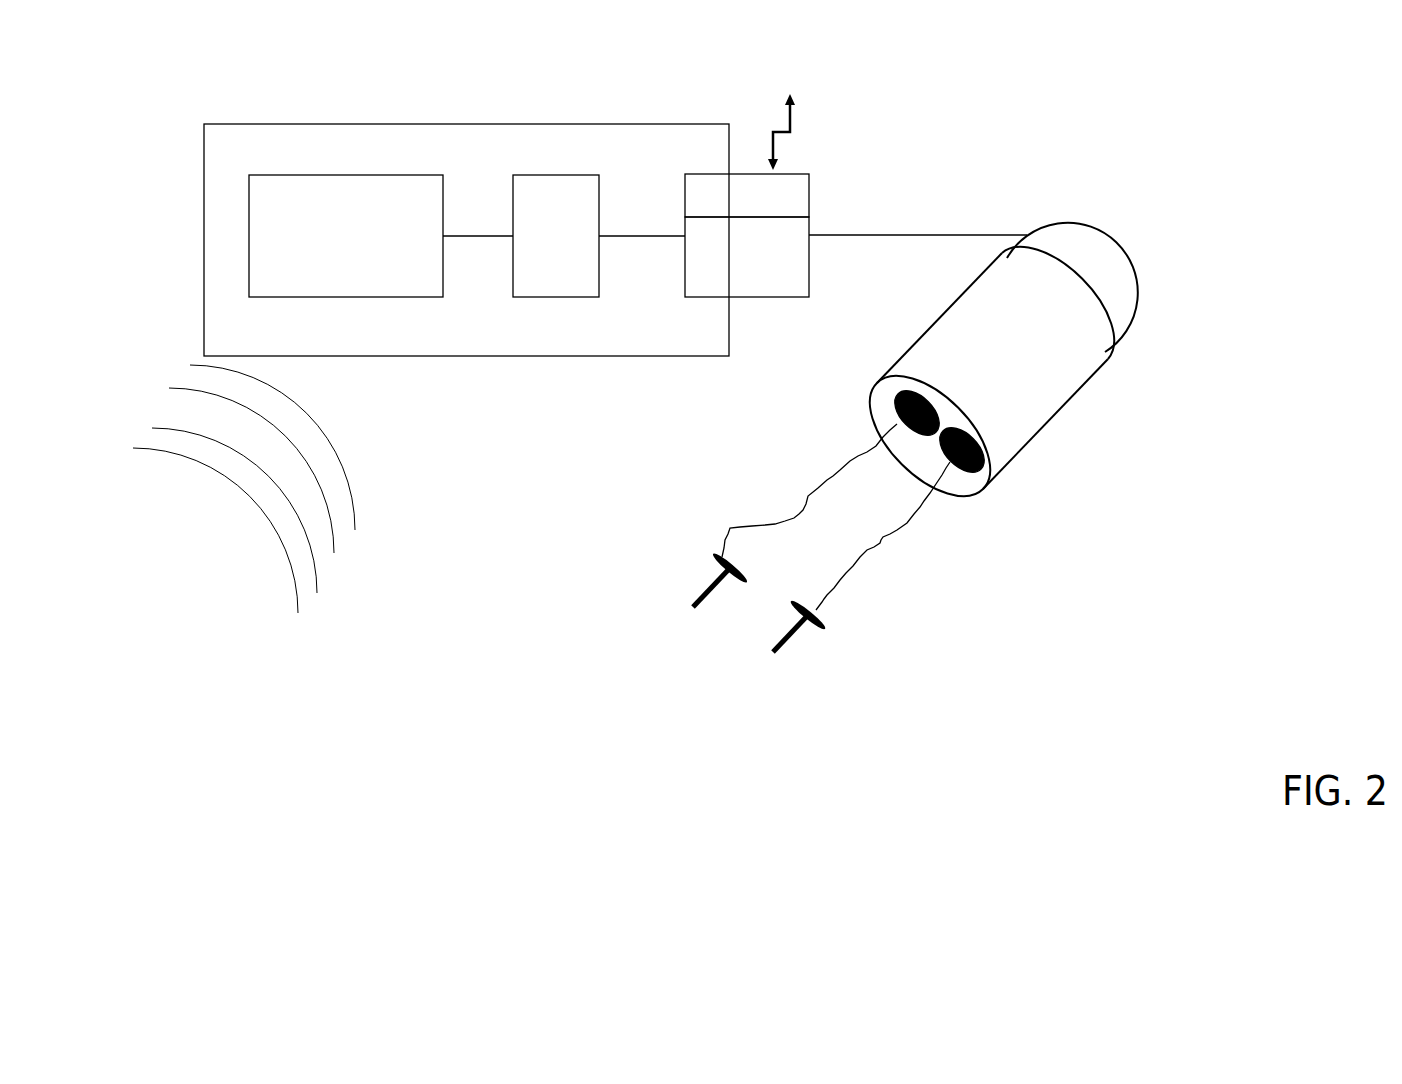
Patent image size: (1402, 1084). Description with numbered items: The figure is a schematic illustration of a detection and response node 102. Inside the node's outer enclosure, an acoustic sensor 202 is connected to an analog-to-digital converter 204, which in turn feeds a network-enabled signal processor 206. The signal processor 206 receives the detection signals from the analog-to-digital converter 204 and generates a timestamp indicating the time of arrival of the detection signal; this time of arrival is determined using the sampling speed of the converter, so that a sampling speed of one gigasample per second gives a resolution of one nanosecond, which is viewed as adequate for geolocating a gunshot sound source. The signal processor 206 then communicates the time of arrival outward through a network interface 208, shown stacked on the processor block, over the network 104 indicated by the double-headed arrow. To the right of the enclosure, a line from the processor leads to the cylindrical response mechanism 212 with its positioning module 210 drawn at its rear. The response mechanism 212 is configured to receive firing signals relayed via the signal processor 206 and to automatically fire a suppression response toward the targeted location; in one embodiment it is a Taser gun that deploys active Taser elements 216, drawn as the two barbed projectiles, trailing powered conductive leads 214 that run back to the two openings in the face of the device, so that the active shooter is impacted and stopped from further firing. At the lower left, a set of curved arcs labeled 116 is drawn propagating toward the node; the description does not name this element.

The detection and response node 102 is at (146, 135).
The network 104 is at (803, 118).
The wireless signals 116 is at (207, 489).
The acoustic sensor 202 is at (328, 249).
The analog-to-digital converter 204 is at (539, 249).
The network-enabled signal processor 206 is at (730, 284).
The network interface 208 is at (730, 207).
The positioning module 210 is at (1065, 269).
The response mechanism 212 is at (978, 364).
The powered conductive leads 214 is at (808, 495).
The active Taser elements 216 is at (787, 632).